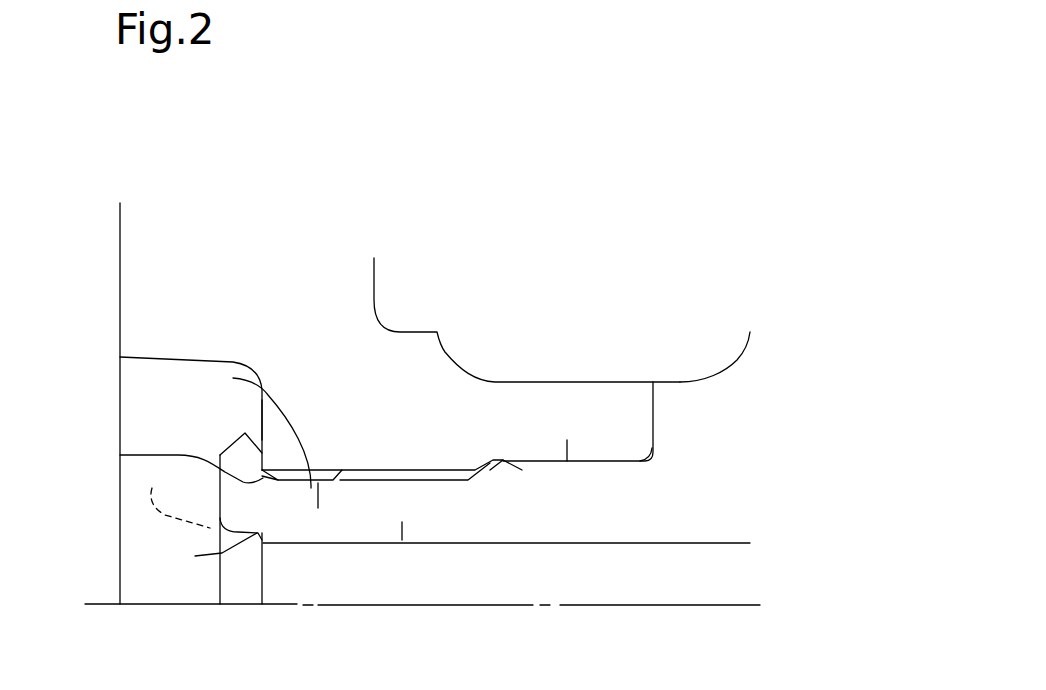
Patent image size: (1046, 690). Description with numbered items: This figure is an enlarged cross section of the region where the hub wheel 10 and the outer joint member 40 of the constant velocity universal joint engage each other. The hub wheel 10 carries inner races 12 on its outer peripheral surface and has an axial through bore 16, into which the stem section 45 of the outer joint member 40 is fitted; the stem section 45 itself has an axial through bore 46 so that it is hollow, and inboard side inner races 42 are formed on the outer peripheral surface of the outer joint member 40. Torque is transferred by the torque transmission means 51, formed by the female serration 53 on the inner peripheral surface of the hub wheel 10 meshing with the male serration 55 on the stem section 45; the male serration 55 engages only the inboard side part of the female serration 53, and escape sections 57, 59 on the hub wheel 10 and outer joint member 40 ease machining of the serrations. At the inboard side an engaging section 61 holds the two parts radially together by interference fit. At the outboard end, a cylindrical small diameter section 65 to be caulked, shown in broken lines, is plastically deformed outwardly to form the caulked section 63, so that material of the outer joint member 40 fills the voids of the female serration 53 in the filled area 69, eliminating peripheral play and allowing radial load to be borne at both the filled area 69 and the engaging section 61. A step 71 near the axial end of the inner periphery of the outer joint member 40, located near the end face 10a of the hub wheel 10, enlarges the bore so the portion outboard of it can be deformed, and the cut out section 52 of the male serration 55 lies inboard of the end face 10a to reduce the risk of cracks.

The hub wheel 10 is at (328, 324).
The end face of the hub wheel 10a is at (260, 420).
The inner races 12 is at (460, 365).
The axial through bore 16 is at (613, 462).
The outer joint member 40 is at (746, 441).
The inboard side inner races 42 is at (737, 360).
The stem section 45 is at (402, 522).
The axial through bore 46 is at (628, 597).
The torque transmission means 51 is at (443, 482).
The cut out section 52 is at (328, 483).
The female serration 53 is at (318, 500).
The male serration 55 is at (384, 469).
The escape section 57 is at (500, 467).
The escape section 59 is at (233, 378).
The engaging section 61 is at (567, 460).
The caulked section 63 is at (223, 443).
The section to be caulked 65 is at (312, 488).
The filled area 69 is at (120, 455).
The step 71 is at (195, 556).